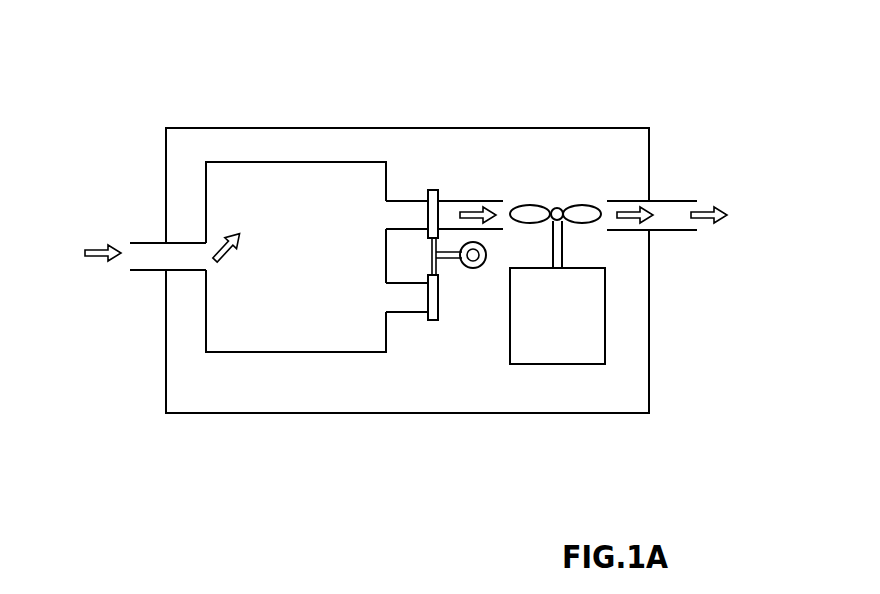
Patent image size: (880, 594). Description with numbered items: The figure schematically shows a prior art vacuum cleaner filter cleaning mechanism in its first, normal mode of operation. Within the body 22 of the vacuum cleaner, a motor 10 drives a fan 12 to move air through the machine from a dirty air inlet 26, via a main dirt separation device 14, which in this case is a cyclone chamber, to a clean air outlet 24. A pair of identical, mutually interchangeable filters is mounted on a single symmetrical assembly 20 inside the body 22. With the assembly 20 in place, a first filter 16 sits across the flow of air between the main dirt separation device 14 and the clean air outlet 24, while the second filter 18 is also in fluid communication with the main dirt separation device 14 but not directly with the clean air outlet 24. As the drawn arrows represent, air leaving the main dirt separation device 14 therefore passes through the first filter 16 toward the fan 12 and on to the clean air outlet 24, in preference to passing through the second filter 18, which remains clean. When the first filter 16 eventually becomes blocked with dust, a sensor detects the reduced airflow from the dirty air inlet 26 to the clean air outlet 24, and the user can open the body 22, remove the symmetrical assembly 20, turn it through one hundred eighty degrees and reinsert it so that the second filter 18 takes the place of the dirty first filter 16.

The motor 10 is at (546, 331).
The fan 12 is at (542, 208).
The main dirt separation device 14 is at (284, 273).
The first filter 16 is at (427, 213).
The second filter 18 is at (435, 320).
The symmetrical filter assembly 20 is at (475, 268).
The body 22 is at (272, 128).
The clean air outlet 24 is at (675, 232).
The dirty air inlet 26 is at (144, 240).